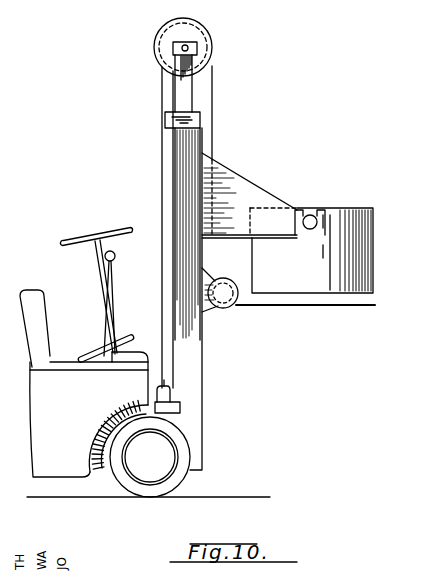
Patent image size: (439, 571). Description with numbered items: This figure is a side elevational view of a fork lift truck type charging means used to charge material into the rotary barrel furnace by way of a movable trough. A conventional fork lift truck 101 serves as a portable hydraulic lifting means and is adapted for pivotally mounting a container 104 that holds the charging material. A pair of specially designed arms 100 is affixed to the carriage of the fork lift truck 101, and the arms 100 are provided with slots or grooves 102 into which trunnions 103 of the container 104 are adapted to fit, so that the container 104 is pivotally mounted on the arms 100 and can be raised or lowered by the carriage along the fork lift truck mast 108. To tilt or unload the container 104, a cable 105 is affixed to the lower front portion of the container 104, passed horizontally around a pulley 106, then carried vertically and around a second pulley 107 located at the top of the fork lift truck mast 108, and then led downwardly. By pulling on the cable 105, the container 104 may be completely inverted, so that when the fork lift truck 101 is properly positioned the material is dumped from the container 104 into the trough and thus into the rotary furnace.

The arms 100 is at (242, 193).
The fork lift truck 101 is at (76, 413).
The slots or grooves 102 is at (300, 240).
The trunnions 103 is at (313, 214).
The container 104 is at (373, 280).
The cable 105 is at (160, 83).
The pulley 106 is at (228, 308).
The pulley 107 is at (205, 41).
The fork lift truck mast 108 is at (182, 175).